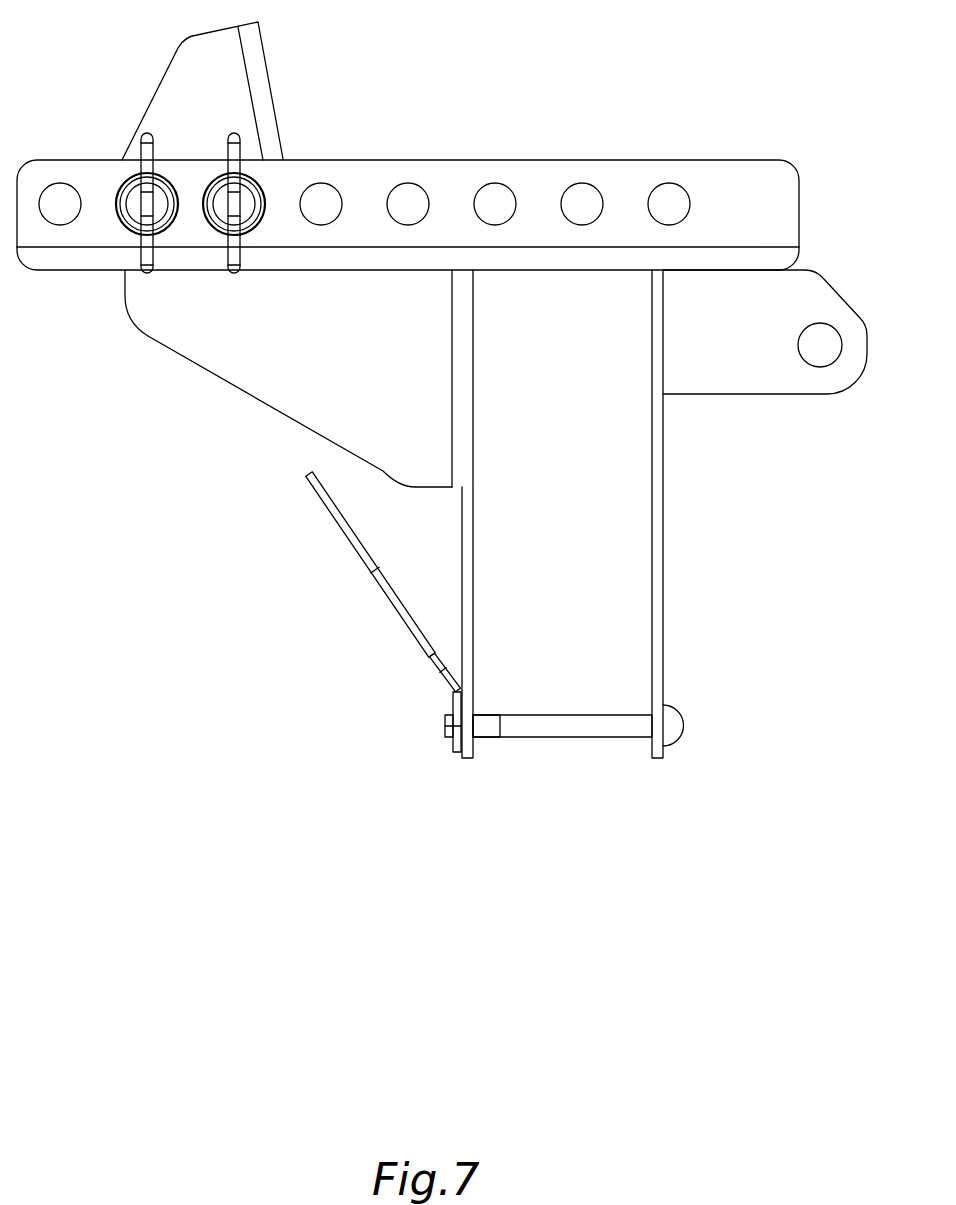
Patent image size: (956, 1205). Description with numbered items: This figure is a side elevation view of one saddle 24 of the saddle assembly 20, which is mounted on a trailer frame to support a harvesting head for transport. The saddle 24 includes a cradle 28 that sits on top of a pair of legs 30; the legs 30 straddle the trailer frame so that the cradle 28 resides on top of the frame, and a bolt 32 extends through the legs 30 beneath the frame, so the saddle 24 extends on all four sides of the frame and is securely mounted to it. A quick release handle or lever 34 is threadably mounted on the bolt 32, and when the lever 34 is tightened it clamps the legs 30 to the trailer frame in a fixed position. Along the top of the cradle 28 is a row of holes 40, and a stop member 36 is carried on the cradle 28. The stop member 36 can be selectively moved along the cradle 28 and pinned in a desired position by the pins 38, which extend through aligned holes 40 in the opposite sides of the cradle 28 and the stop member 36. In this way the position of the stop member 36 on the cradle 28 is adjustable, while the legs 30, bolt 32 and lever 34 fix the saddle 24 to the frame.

The saddle assembly 20 is at (703, 68).
The saddle 24 is at (222, 373).
The cradle 28 is at (788, 205).
The legs 30 is at (470, 530).
The bolt 32 is at (562, 718).
The quick release handle or lever 34 is at (372, 572).
The stop member 36 is at (192, 52).
The pins 38 is at (157, 208).
The holes 40 is at (325, 197).